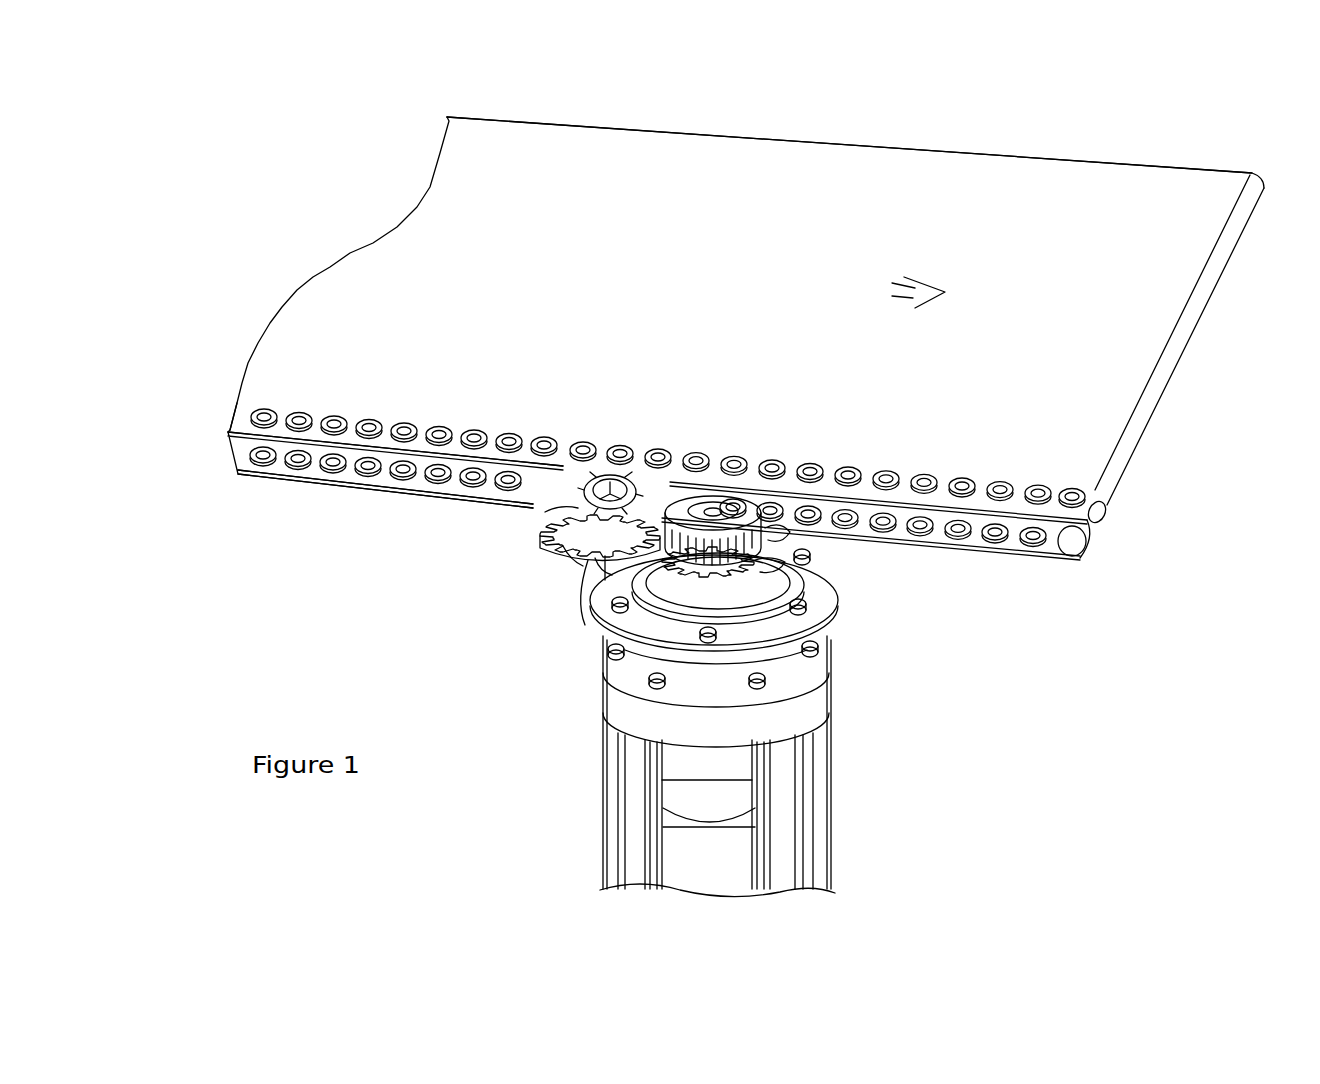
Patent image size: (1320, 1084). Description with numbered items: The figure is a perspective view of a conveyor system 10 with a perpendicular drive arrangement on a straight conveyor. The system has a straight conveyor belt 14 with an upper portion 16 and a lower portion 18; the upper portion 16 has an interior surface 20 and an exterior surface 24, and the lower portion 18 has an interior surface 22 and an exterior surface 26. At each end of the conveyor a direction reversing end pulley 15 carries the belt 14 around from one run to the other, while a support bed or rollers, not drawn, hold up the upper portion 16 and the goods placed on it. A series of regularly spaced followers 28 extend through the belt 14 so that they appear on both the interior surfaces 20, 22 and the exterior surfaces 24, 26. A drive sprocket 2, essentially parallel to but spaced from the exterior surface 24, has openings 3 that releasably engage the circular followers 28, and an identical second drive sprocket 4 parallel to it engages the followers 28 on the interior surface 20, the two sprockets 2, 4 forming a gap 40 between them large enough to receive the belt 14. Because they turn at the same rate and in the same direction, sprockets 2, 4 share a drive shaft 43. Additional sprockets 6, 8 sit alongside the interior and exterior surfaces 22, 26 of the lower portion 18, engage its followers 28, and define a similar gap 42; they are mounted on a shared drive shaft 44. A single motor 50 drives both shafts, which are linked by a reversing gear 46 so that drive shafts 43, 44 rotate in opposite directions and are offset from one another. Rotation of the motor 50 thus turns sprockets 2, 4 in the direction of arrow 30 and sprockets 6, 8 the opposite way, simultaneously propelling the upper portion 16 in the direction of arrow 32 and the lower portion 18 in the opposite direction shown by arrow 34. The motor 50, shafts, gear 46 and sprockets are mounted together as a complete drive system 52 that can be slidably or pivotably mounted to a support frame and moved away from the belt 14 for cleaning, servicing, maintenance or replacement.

The conveyor system 10 is at (1080, 683).
The straight conveyor belt 14 is at (679, 280).
The end pulley 15 is at (1075, 545).
The upper portion 16 is at (637, 160).
The lower portion 18 is at (442, 500).
The interior surface 20 is at (232, 440).
The interior surface 22 is at (250, 465).
The exterior surface 24 is at (258, 392).
The exterior surface 26 is at (305, 487).
The followers 28 is at (890, 462).
The arrow 30 is at (603, 468).
The arrow 32 is at (903, 281).
The arrow 34 is at (905, 525).
The gap 40 is at (532, 506).
The drive sprocket 2 is at (560, 505).
The openings 3 is at (575, 527).
The second drive sprocket 4 is at (600, 548).
The gap 42 is at (815, 606).
The drive shaft 43 is at (598, 570).
The drive shaft 44 is at (713, 515).
The reversing gear 46 is at (713, 496).
The sprocket 6 is at (773, 535).
The sprocket 8 is at (763, 570).
The motor 50 is at (818, 833).
The drive system 52 is at (920, 708).